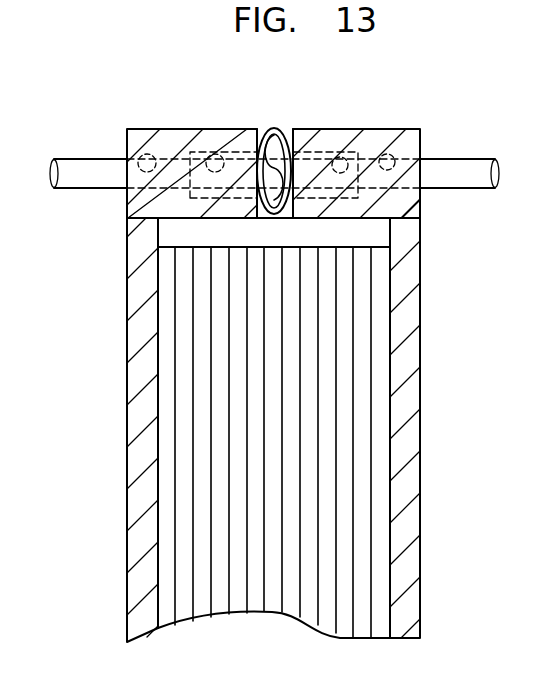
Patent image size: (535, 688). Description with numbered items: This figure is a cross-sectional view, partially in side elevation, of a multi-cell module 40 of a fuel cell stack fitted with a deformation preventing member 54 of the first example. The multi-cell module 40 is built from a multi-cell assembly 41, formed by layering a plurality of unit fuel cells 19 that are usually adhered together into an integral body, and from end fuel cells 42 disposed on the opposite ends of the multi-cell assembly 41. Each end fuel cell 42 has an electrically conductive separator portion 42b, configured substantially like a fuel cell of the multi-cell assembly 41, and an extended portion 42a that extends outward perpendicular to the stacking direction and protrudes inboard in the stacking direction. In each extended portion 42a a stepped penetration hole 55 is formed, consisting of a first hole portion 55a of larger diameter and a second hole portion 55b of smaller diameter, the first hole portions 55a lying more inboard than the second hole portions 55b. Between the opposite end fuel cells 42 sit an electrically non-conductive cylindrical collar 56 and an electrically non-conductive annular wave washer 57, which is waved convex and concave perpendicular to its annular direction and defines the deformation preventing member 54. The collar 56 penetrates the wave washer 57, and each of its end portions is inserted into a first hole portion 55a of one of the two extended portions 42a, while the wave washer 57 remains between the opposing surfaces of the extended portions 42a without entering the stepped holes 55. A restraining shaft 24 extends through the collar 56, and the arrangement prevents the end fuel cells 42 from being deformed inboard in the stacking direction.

The unit fuel cell 19 is at (388, 645).
The restraining shaft 24 is at (77, 170).
The multi-cell module 40 is at (266, 408).
The multi-cell assembly 41 is at (226, 453).
The end fuel cell 42 is at (271, 385).
The extended portion 42a is at (115, 159).
The separator portion 42b is at (115, 250).
The deformation preventing member 54 is at (282, 128).
The stepped penetration hole 55 is at (233, 86).
The first hole portion 55a is at (217, 154).
The second hole portion 55b is at (147, 154).
The cylindrical collar 56 is at (250, 128).
The annular wave washer 57 is at (310, 125).